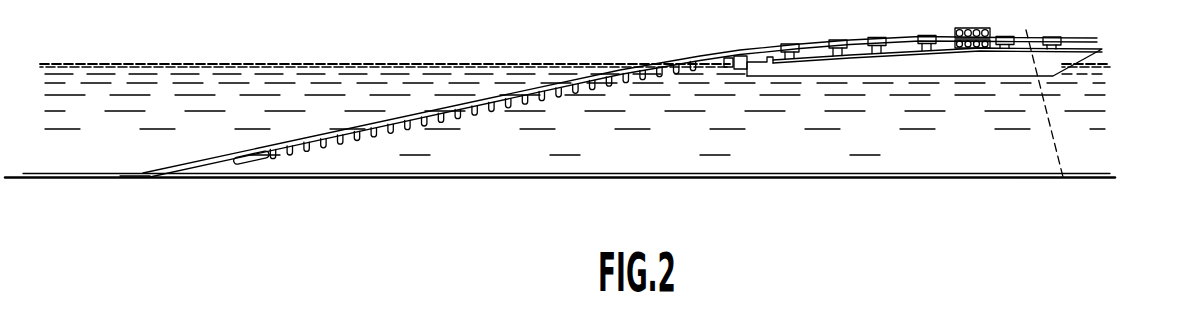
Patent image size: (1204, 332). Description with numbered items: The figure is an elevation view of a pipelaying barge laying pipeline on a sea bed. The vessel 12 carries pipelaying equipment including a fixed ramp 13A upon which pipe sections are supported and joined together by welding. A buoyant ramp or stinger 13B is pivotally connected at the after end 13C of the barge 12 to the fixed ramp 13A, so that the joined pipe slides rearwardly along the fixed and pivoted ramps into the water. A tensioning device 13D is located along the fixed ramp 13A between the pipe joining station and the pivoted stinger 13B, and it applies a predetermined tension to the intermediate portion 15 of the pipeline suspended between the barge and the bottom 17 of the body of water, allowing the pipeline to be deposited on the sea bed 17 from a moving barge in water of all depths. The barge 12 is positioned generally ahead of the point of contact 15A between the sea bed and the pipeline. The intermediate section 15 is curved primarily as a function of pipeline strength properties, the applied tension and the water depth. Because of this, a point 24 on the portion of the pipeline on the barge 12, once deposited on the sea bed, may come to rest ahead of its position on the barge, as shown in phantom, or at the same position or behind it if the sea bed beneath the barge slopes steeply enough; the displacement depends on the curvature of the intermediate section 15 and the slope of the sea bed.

The vessel 12 is at (989, 72).
The fixed ramp 13A is at (925, 37).
The buoyant ramp or stinger 13B is at (548, 103).
The after end 13C is at (733, 57).
The tensioning device 13D is at (978, 28).
The intermediate portion of the pipeline 15 is at (232, 157).
The point of contact 15A is at (122, 178).
The sea bed 17 is at (510, 180).
The point on the pipeline 24 is at (1028, 34).